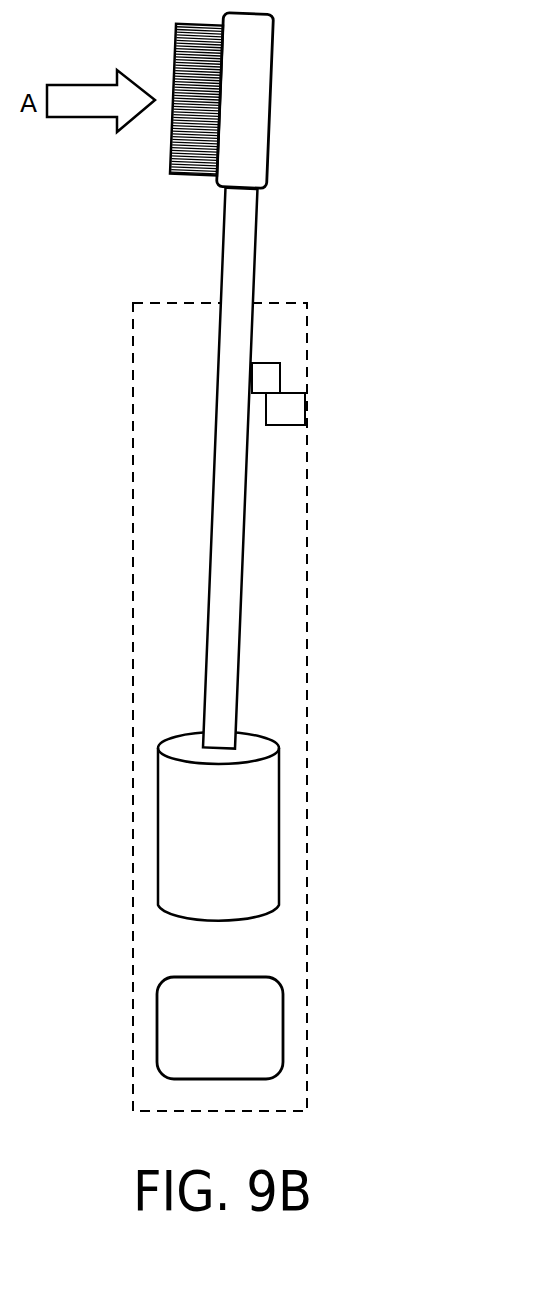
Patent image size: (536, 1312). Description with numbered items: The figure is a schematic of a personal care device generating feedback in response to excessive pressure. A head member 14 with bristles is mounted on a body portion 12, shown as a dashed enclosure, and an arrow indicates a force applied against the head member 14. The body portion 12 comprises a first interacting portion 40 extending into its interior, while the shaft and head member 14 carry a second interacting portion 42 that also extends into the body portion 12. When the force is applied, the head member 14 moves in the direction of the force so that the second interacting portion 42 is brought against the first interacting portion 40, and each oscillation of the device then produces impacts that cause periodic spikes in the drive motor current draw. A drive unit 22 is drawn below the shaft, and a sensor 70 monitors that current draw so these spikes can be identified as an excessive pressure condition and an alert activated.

The body portion 12 is at (307, 668).
The head member 14 is at (267, 133).
The drive unit 22 is at (279, 828).
The first interacting portion 40 is at (305, 407).
The second interacting portion 42 is at (280, 377).
The sensor 70 is at (283, 1023).